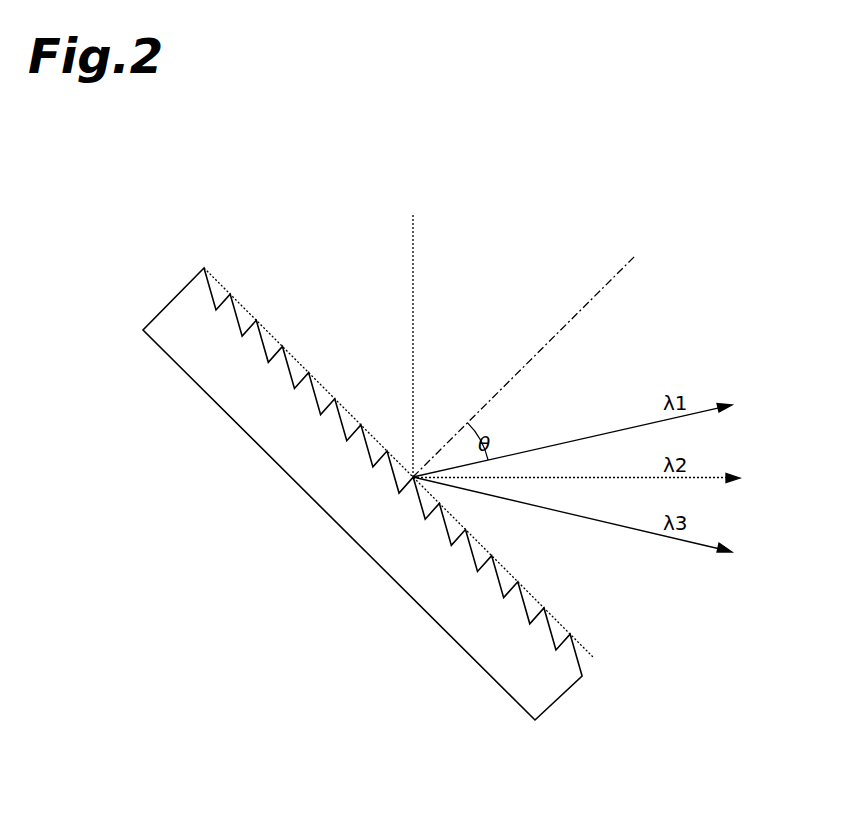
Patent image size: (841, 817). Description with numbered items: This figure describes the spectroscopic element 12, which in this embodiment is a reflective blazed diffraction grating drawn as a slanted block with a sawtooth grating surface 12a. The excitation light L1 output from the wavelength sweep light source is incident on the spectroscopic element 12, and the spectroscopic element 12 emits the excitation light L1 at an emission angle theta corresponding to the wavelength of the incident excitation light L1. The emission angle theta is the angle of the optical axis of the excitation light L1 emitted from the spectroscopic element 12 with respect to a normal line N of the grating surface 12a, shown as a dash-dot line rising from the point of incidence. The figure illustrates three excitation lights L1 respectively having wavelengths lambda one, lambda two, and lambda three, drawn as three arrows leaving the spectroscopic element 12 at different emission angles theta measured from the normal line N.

The spectroscopic element 12 is at (337, 523).
The grating surface 12a is at (587, 647).
The excitation light L1 is at (413, 237).
The normal line N is at (620, 272).